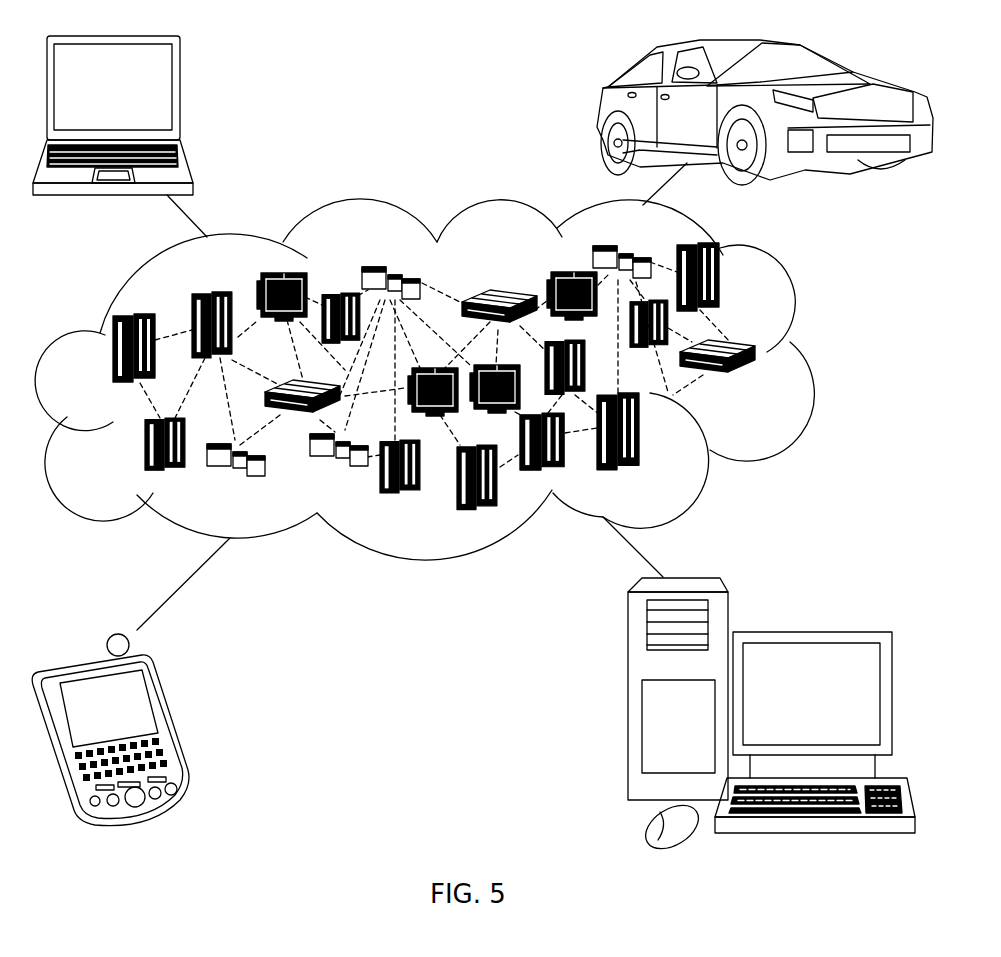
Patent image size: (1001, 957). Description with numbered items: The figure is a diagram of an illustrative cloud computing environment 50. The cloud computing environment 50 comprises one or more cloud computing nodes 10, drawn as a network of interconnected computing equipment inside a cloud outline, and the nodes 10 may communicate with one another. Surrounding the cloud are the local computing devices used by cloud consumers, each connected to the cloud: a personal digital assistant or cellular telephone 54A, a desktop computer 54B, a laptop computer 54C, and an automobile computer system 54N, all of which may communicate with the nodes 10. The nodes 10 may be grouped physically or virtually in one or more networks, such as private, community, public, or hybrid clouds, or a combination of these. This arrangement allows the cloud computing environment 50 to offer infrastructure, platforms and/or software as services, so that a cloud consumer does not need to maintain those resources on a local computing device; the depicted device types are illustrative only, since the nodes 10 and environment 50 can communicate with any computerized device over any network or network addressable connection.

The cloud computing node 10 is at (481, 376).
The cloud computing environment 50 is at (813, 358).
The personal digital assistant (PDA) or cellular telephone 54A is at (167, 727).
The desktop computer 54B is at (810, 632).
The laptop computer 54C is at (181, 97).
The automobile computer system 54N is at (600, 117).